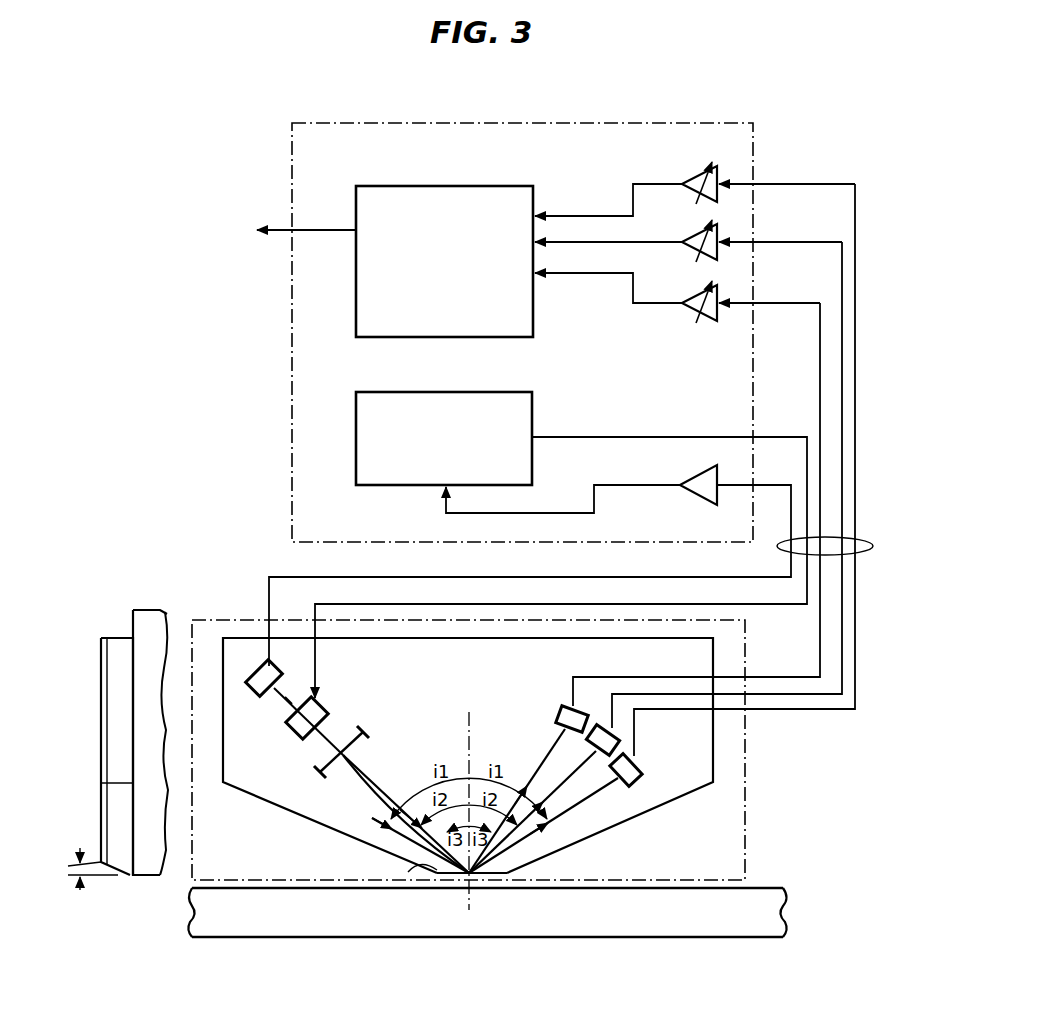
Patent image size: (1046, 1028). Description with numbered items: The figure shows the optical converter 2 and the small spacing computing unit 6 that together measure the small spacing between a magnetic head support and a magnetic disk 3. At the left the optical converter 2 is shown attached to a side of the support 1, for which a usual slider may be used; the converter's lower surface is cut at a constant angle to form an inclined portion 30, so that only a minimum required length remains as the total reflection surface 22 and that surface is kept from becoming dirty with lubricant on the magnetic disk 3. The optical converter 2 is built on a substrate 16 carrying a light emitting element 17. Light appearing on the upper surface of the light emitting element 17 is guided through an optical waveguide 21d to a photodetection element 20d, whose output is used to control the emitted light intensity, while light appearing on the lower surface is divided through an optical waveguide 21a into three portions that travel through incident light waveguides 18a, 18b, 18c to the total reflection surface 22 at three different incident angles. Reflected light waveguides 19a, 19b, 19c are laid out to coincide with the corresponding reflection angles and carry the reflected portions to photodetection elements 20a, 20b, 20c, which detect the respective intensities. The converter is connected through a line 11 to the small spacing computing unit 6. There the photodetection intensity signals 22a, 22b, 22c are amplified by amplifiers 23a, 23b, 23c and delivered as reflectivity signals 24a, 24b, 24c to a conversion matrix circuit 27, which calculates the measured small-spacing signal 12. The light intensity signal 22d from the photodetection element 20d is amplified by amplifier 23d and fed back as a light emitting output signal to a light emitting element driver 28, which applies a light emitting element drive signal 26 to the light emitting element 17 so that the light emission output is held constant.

The support 1 is at (148, 614).
The optical converter 2 is at (745, 836).
The magnetic disk 3 is at (678, 940).
The small spacing computing unit 6 is at (712, 123).
The line 11 is at (858, 541).
The measured small-spacing signal 12 is at (281, 230).
The substrate 16 is at (203, 786).
The light emitting element 17 is at (323, 708).
The incident light waveguide 18a is at (368, 789).
The incident light waveguide 18b is at (398, 840).
The incident light waveguide 18c is at (374, 776).
The reflected light waveguide 19a is at (585, 806).
The reflected light waveguide 19b is at (560, 786).
The reflected light waveguide 19c is at (546, 752).
The photodetection element 20a is at (640, 778).
The photodetection element 20b is at (600, 730).
The photodetection element 20c is at (558, 710).
The photodetection element 20d is at (253, 690).
The optical waveguide 21a is at (320, 745).
The lens 21d is at (292, 690).
The total reflection surface 22 is at (408, 868).
The photodetection intensity signal 22a is at (787, 184).
The photodetection intensity signal 22b is at (787, 242).
The photodetection intensity signal 22c is at (787, 303).
The drive line 22d is at (775, 485).
The amplifier 23a is at (691, 180).
The amplifier 23b is at (691, 238).
The amplifier 23c is at (691, 299).
The amplifier 23d is at (694, 476).
The reflectivity signal 24a is at (604, 214).
The reflectivity signal 24b is at (605, 245).
The reflectivity signal 24c is at (605, 276).
The light emitting element drive signal 26 is at (590, 437).
The conversion matrix circuit 27 is at (453, 186).
The light emitting element driver 28 is at (453, 392).
The taper portion 30 is at (121, 646).